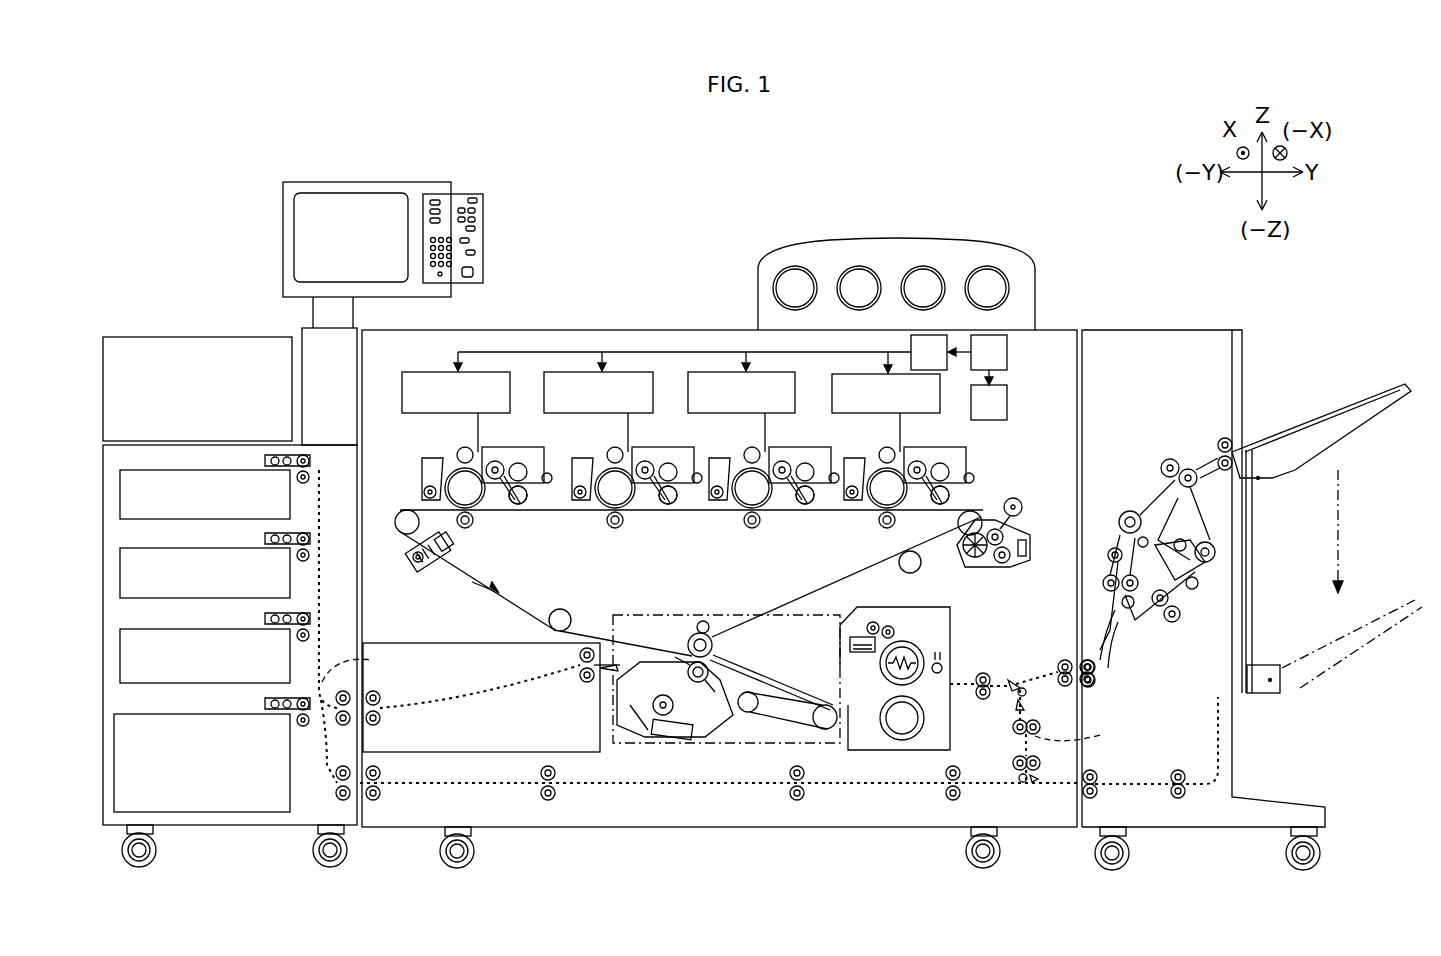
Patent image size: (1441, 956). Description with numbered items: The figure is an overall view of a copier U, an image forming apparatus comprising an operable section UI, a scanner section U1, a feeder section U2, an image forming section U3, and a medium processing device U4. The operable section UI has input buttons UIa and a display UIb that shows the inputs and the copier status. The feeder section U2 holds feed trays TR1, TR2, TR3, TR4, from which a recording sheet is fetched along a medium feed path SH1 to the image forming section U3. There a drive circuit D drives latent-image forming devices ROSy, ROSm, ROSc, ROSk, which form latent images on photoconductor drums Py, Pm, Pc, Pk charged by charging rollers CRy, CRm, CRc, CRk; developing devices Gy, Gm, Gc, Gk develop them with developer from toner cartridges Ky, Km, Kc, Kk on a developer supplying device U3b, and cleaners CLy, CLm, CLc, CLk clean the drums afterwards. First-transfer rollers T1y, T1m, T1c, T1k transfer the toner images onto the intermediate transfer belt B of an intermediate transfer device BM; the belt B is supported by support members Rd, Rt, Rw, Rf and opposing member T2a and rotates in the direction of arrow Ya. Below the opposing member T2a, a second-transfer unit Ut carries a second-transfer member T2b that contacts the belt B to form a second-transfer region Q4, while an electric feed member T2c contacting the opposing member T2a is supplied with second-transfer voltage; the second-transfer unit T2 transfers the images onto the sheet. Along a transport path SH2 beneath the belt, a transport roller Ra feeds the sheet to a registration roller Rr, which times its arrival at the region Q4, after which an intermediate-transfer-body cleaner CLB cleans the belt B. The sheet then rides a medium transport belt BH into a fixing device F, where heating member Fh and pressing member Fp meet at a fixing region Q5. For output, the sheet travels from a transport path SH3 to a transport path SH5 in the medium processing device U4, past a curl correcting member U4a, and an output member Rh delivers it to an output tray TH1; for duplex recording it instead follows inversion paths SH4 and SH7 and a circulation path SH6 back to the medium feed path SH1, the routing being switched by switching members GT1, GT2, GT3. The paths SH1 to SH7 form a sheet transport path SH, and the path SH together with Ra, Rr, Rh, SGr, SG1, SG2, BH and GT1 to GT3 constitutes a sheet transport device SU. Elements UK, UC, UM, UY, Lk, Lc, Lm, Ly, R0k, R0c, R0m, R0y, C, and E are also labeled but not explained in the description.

The copier U is at (172, 270).
The scanner section U1 is at (204, 340).
The feeder section U2 is at (310, 334).
The image forming section U3 is at (643, 332).
The developer supplying device U3b is at (917, 247).
The medium processing device U4 is at (1135, 305).
The curl correcting member U4a is at (1146, 487).
The operable section UI is at (432, 218).
The input buttons UIa is at (497, 222).
The display UIb is at (335, 218).
The feed tray TR1 is at (182, 494).
The feed tray TR2 is at (182, 572).
The feed tray TR3 is at (182, 652).
The feed tray TR4 is at (182, 737).
The sheet transport path SH is at (310, 819).
The medium feed path SH1 is at (373, 667).
The transport path SH2 is at (487, 698).
The transport path SH3 is at (1058, 648).
The inversion path SH4 is at (1086, 729).
The transport path SH5 is at (1110, 667).
The circulation path SH6 is at (460, 790).
The inversion path SH7 is at (1148, 770).
The sheet transport device SU is at (527, 845).
The transport roller Ra is at (380, 695).
The registration roller Rr is at (578, 655).
The sheet transport device component SGr is at (578, 677).
The sheet transport device component SG1 is at (675, 701).
The sheet transport device component SG2 is at (757, 662).
The second-transfer unit Ut is at (739, 695).
The intermediate transfer device BM is at (676, 583).
The intermediate transfer belt B is at (862, 584).
The support member Rf is at (405, 530).
The support member Rd is at (964, 534).
The support member Rw is at (568, 622).
The support member Rt is at (413, 565).
The arrow Ya is at (499, 592).
The first-transfer roller T1k is at (463, 530).
The first-transfer roller T1c is at (612, 528).
The first-transfer roller T1m is at (752, 527).
The first-transfer roller T1y is at (886, 528).
The second-transfer unit T2 is at (678, 622).
The opposing member T2a is at (695, 638).
The second-transfer member T2b is at (690, 671).
The electric feed member T2c is at (705, 618).
The second-transfer region Q4 is at (722, 657).
The fixing region Q5 is at (865, 690).
The medium transport belt BH is at (785, 727).
The fixing device F is at (868, 691).
The heating member Fh is at (915, 647).
The pressing member Fp is at (885, 740).
The switching member GT1 is at (1005, 678).
The switching member GT2 is at (1016, 706).
The switching member GT3 is at (1027, 792).
The intermediate-transfer-body cleaner CLB is at (990, 577).
The image forming unit K UK is at (457, 517).
The image forming unit C UC is at (609, 517).
The image forming unit M UM is at (762, 515).
The image forming unit Y UY is at (953, 497).
The cleaner CLk is at (422, 465).
The cleaner CLc is at (577, 497).
The cleaner CLm is at (720, 500).
The cleaner CLy is at (852, 500).
The charging roller CRk is at (460, 452).
The charging roller CRc is at (608, 465).
The charging roller CRm is at (755, 463).
The charging roller CRy is at (880, 453).
The photoconductor drum Pk is at (473, 497).
The photoconductor drum Pc is at (613, 495).
The photoconductor drum Pm is at (752, 507).
The photoconductor drum Py is at (893, 493).
The developing device Gk is at (519, 497).
The developing device Gc is at (665, 499).
The developing device Gm is at (813, 500).
The developing device Gy is at (953, 488).
The developing roller K R0k is at (512, 510).
The developing roller C R0c is at (665, 503).
The developing roller M R0m is at (805, 505).
The developing roller Y R0y is at (946, 483).
The laser beam K Lk is at (480, 413).
The laser beam C Lc is at (629, 413).
The laser beam M Lm is at (766, 413).
The laser beam Y Ly is at (902, 413).
The latent-image forming device ROSk is at (491, 383).
The latent-image forming device ROSc is at (617, 386).
The latent-image forming device ROSm is at (720, 386).
The latent-image forming device ROSy is at (872, 387).
The toner cartridge Kk is at (804, 280).
The toner cartridge Kc is at (868, 280).
The toner cartridge Km is at (935, 280).
The toner cartridge Ky is at (1004, 280).
The latent-image-forming-device drive circuit D is at (938, 353).
The controller C is at (1007, 352).
The power supply circuit E is at (1007, 402).
The output member Rh is at (1217, 440).
The output tray TH1 is at (1362, 410).